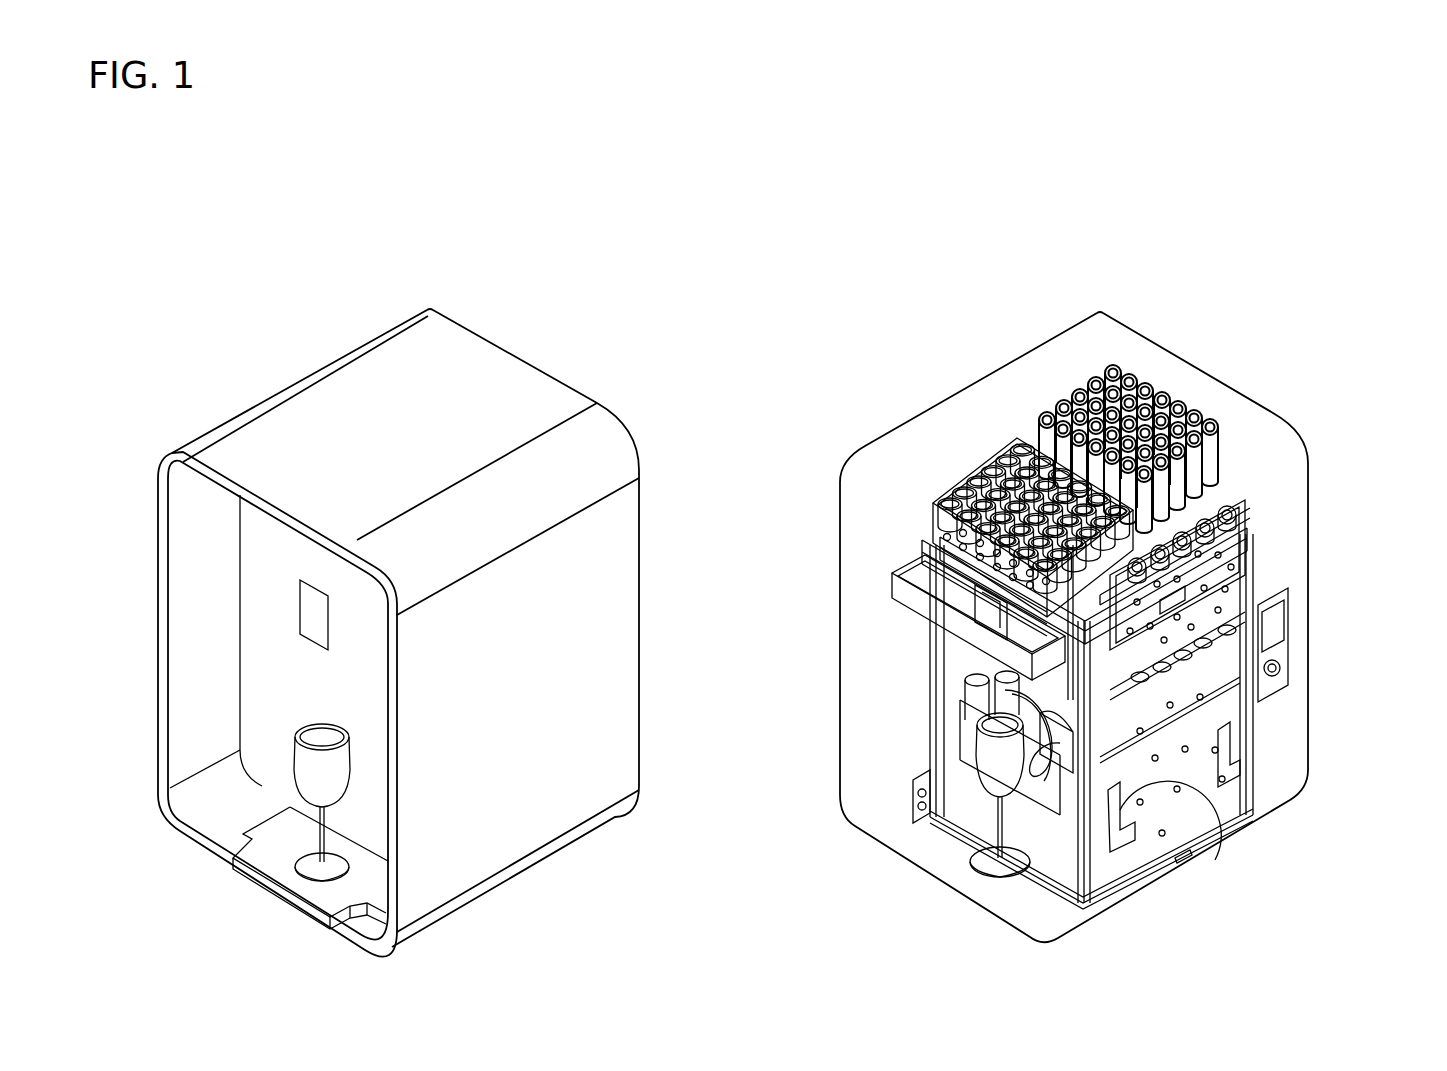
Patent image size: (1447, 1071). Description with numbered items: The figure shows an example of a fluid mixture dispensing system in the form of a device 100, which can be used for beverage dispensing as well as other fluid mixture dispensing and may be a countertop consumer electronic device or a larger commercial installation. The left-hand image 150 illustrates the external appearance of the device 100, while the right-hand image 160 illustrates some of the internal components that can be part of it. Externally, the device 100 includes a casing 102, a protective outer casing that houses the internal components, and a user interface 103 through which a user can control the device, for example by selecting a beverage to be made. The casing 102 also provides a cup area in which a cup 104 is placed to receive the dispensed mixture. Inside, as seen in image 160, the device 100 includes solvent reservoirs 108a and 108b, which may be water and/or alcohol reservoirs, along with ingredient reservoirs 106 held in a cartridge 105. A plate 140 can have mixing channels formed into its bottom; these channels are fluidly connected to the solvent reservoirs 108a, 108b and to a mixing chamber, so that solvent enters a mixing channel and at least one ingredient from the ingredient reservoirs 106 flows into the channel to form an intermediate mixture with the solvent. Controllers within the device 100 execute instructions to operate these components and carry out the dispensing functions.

The fluid mixture dispensing device 100 is at (628, 378).
The casing 102 is at (643, 610).
The user interface 103 is at (320, 617).
The cup 104 is at (300, 780).
The cartridge 105 is at (973, 477).
The ingredient reservoirs 106 is at (1097, 380).
The solvent reservoir 108a is at (1027, 870).
The solvent reservoir 108b is at (1060, 741).
The plate 140 is at (1250, 477).
The image 150 is at (455, 185).
The image 160 is at (1153, 185).